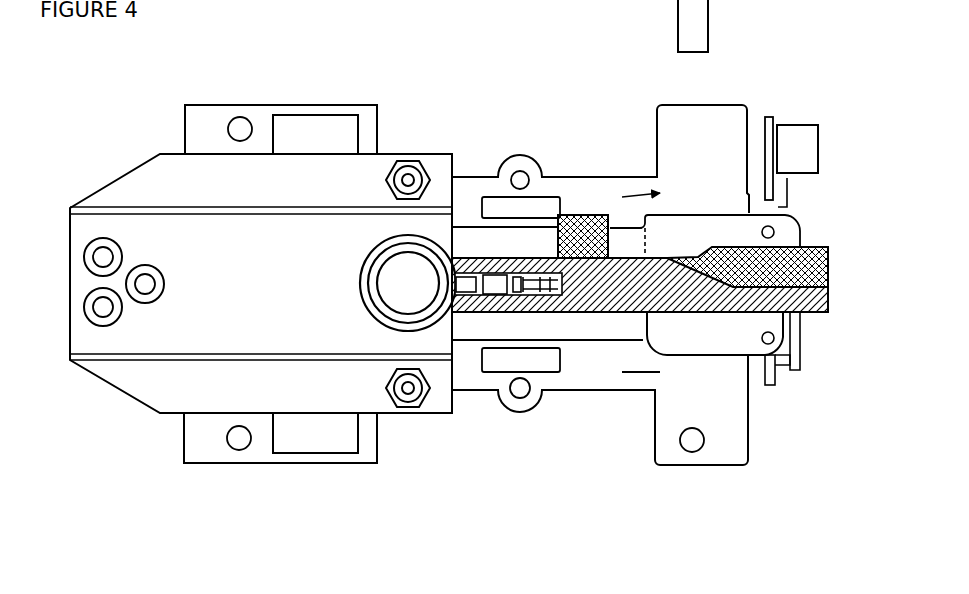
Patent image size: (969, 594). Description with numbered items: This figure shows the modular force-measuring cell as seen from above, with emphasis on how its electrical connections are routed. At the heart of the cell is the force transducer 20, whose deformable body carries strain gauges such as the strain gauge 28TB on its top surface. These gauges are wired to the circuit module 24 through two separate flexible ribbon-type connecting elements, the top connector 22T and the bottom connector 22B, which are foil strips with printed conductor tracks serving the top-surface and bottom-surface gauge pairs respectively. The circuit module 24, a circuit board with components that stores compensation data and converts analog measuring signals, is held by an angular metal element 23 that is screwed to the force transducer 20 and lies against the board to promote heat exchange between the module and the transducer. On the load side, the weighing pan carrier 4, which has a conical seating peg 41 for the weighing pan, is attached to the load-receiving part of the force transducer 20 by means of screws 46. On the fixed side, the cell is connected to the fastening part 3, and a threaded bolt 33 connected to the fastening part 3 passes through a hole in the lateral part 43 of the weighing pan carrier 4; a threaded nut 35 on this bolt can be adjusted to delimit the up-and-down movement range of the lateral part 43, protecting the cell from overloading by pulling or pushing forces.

The fastening part 3 is at (558, 395).
The weighing pan carrier 4 is at (165, 187).
The force transducer 20 is at (528, 247).
The bottom ribbon-type connecting element 22B is at (613, 222).
The top ribbon-type connecting element 22T is at (738, 242).
The angular metal element 23 is at (708, 330).
The circuit module 24 is at (793, 133).
The strain gauge 28TB is at (552, 312).
The threaded bolt 33 is at (418, 157).
The threaded nut 35 is at (403, 158).
The conical seating peg 41 is at (395, 282).
The lateral part 43 is at (330, 187).
The screws 46 is at (147, 264).